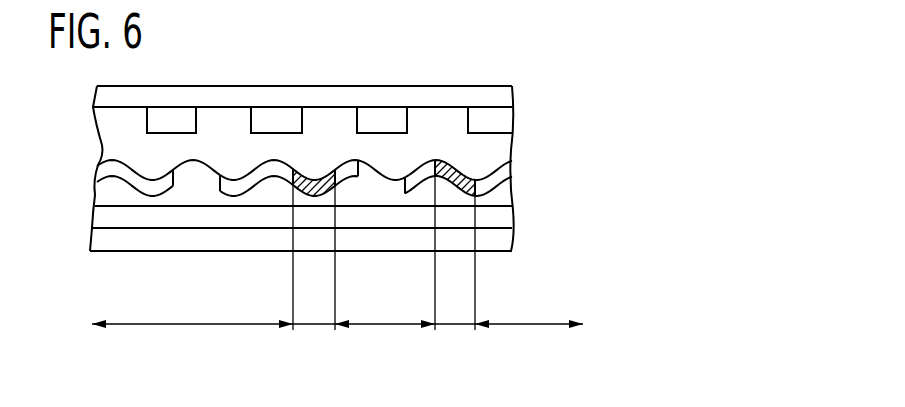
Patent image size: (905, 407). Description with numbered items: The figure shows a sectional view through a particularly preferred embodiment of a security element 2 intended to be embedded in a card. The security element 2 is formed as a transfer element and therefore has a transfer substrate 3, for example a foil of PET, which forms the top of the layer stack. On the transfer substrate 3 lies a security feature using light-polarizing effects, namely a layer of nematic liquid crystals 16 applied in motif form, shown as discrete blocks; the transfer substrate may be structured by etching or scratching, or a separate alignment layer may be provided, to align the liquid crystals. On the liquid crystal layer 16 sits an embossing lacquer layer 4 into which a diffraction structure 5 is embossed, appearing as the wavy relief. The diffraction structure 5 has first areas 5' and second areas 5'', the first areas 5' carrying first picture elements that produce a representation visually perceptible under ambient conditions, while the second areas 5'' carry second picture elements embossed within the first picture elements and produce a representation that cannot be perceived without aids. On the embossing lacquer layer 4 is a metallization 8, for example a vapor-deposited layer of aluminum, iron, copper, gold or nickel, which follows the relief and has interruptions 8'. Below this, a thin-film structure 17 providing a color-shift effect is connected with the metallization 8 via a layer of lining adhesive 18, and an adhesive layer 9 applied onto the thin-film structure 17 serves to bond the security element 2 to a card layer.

The security element 2 is at (73, 105).
The transfer substrate 3 is at (500, 97).
The embossing lacquer layer 4 is at (507, 152).
The diffraction structure 5 is at (114, 134).
The first areas 5' is at (337, 310).
The second areas 5'' is at (384, 253).
The metallization 8 is at (326, 177).
The interruptions 8' is at (298, 236).
The adhesive layer 9 is at (503, 247).
The layer of nematic liquid crystals 16 is at (500, 128).
The thin-film structure 17 is at (502, 218).
The layer of lining adhesive 18 is at (502, 190).